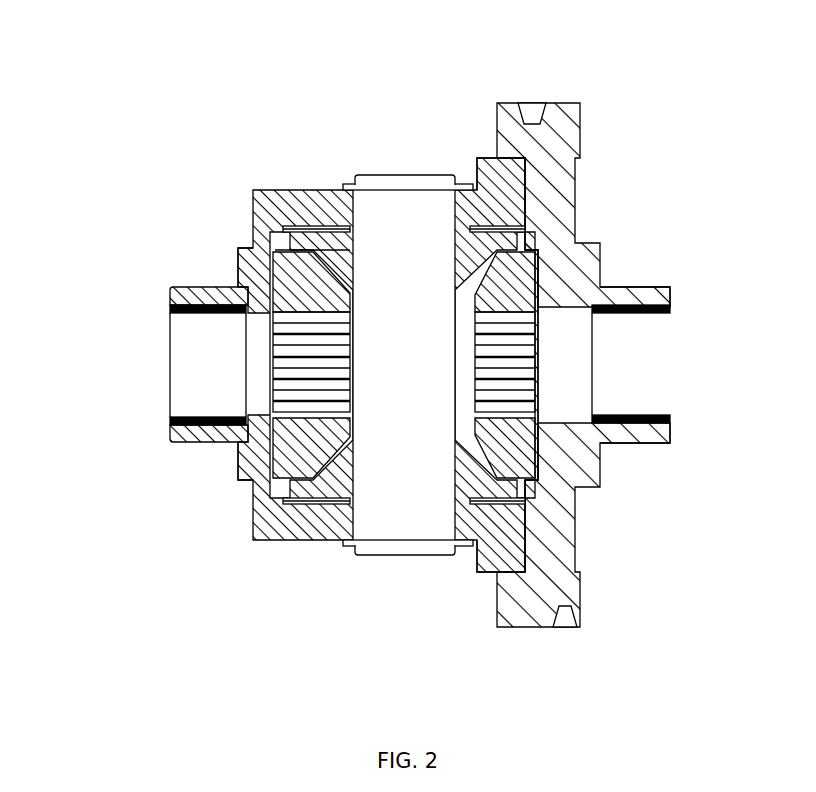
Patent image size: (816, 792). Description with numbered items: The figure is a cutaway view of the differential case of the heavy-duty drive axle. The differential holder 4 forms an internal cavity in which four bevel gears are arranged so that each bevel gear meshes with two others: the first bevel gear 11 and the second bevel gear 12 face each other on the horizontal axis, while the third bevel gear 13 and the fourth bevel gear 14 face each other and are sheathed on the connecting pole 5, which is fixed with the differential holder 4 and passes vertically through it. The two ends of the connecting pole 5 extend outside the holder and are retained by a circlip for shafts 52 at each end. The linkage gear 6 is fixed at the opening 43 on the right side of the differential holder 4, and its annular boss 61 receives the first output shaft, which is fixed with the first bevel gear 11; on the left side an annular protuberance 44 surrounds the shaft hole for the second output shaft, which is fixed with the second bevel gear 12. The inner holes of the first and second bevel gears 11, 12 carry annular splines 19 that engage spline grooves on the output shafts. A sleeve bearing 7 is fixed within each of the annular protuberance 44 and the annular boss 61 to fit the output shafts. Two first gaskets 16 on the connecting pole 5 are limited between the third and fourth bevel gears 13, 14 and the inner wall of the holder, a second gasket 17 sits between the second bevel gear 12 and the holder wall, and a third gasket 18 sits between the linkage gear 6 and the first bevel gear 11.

The differential holder 4 is at (268, 200).
The connecting pole 5 is at (418, 478).
The linkage gear 6 is at (555, 145).
The sleeve bearing 7 is at (172, 433).
The first bevel gear 11 is at (520, 457).
The second bevel gear 12 is at (290, 447).
The third bevel gear 13 is at (332, 245).
The fourth bevel gear 14 is at (487, 487).
The first gasket 16 is at (468, 230).
The second gasket 17 is at (237, 253).
The third gasket 18 is at (540, 265).
The annular spline 19 is at (298, 388).
The opening 43 is at (210, 358).
The annular protuberance 44 is at (173, 292).
The circlip for shafts 52 is at (398, 190).
The annular boss 61 is at (632, 433).